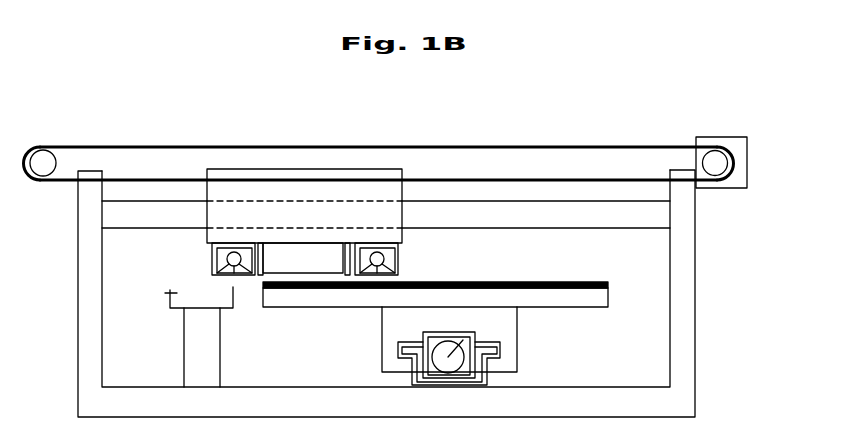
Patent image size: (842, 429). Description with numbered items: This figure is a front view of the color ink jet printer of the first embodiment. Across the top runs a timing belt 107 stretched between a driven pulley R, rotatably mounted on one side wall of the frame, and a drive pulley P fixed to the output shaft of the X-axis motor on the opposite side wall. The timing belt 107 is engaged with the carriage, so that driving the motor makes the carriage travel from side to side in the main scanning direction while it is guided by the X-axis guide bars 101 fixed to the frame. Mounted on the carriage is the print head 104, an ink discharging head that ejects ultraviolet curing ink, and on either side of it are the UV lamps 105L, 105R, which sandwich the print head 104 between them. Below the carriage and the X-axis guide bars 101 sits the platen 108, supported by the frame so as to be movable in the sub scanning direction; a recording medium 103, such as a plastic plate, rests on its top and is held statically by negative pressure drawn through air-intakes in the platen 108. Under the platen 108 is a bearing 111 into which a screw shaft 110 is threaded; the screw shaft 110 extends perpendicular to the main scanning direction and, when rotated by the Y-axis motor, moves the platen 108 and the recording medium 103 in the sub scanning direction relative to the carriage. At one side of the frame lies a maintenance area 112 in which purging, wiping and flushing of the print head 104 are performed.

The timing belt 107 is at (546, 142).
The driven pulley R is at (38, 160).
The drive pulley P is at (718, 148).
The X-axis guide bar 101 is at (538, 222).
The print head 104 is at (262, 276).
The UV lamp 105L is at (228, 262).
The UV lamp 105R is at (383, 258).
The recording medium 103 is at (597, 281).
The platen 108 is at (588, 307).
The screw shaft 110 is at (475, 332).
The bearing 111 is at (382, 335).
The maintenance area 112 is at (170, 294).